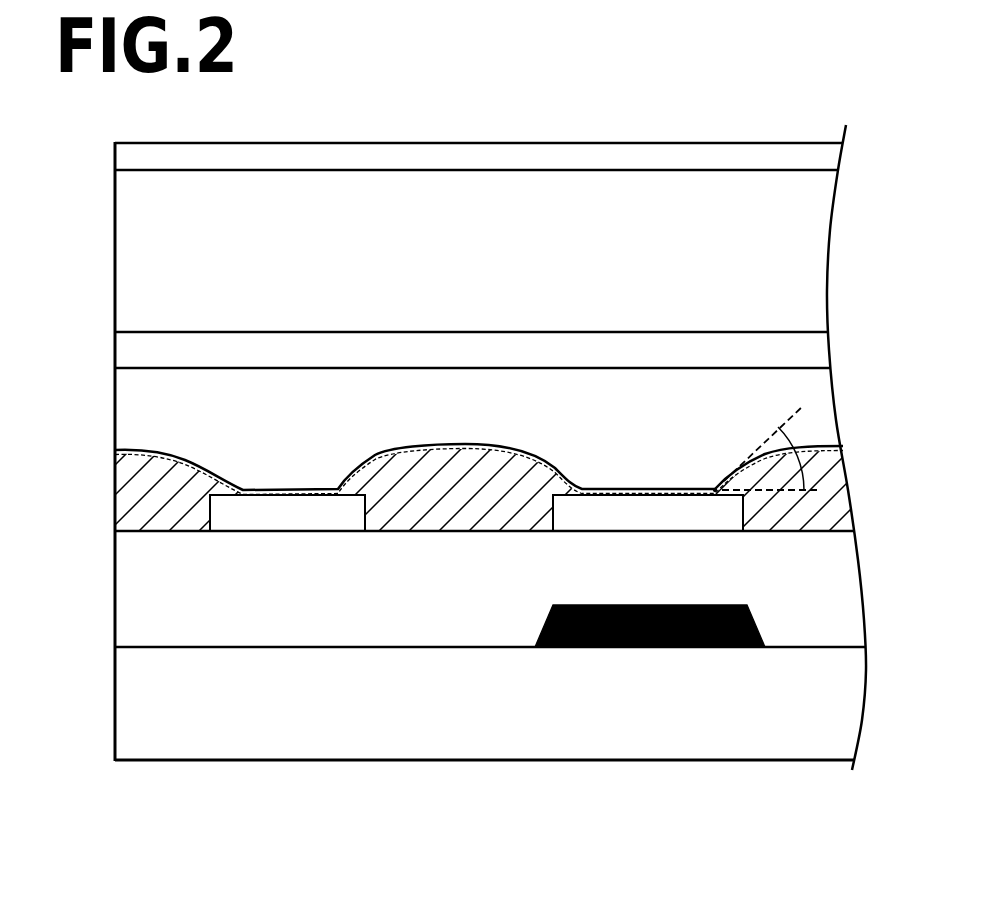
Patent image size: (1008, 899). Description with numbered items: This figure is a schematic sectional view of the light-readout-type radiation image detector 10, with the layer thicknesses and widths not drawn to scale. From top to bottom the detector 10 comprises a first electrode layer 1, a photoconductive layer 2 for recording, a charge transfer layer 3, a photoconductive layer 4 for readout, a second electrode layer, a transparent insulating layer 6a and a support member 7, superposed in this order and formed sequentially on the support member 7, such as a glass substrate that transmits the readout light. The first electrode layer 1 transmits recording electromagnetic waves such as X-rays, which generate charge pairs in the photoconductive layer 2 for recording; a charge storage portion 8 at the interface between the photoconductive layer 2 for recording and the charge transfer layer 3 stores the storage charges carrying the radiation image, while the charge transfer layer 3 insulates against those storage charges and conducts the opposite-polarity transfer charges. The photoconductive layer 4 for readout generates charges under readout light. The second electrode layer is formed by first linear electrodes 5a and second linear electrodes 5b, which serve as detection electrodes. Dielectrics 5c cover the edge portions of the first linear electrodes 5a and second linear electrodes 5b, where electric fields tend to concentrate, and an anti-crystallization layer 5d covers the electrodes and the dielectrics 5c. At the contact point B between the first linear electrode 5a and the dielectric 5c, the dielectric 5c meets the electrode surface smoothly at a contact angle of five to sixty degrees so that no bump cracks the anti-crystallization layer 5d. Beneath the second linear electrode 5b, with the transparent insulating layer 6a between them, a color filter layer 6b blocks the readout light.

The radiation image detector 10 is at (750, 112).
The first electrode layer 1 is at (122, 158).
The photoconductive layer for recording 2 is at (122, 240).
The charge storage portion 8 is at (160, 328).
The charge transfer layer 3 is at (122, 357).
The photoconductive layer for readout 4 is at (122, 417).
The first linear electrode 5a is at (279, 512).
The second linear electrode 5b is at (641, 507).
The dielectric 5c is at (167, 470).
The anti-crystallization layer 5d is at (541, 455).
The contact point B is at (715, 487).
The transparent insulating layer 6a is at (122, 597).
The color filter layer 6b is at (738, 648).
The support member 7 is at (122, 712).